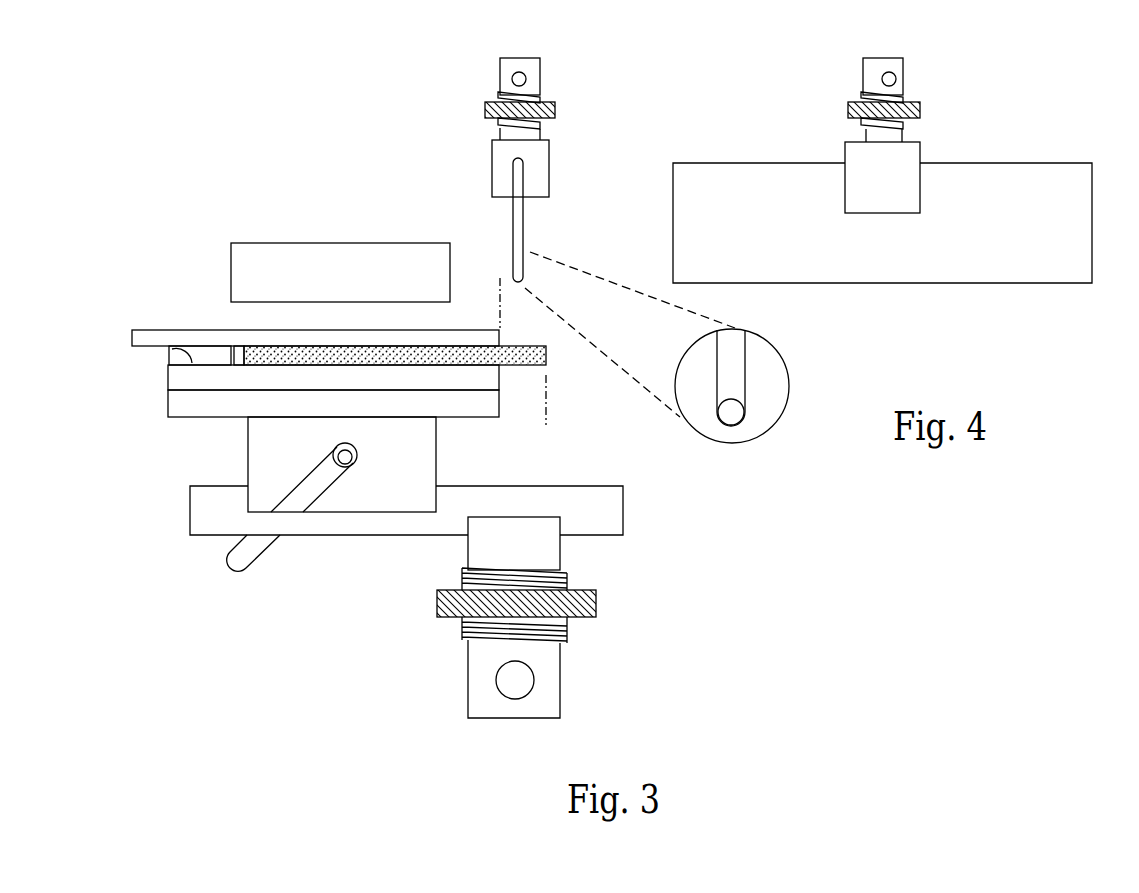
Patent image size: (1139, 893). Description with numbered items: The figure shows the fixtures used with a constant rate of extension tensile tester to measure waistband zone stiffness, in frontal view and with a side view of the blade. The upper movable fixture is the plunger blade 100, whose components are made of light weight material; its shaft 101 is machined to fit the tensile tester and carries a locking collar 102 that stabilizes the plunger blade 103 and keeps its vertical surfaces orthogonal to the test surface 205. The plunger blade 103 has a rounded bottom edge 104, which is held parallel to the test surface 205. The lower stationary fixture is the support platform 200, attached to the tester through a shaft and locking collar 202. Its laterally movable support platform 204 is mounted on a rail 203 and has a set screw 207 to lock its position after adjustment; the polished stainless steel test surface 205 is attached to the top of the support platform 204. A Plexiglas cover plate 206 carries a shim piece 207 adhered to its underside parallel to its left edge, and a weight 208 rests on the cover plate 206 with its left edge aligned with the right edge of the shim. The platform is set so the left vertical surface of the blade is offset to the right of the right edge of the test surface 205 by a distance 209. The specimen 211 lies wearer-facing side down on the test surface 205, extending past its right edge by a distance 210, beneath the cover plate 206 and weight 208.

In FIG. 3, the plunger blade 100 is at (355, 97).
In FIG. 4, the plunger blade 100 is at (988, 105).
In FIG. 3, the shaft 101 is at (540, 72).
In FIG. 4, the shaft 101 is at (883, 76).
In FIG. 3, the locking collar 102 is at (555, 110).
In FIG. 4, the locking collar 102 is at (884, 117).
In FIG. 3, the plunger blade 103 is at (523, 223).
In FIG. 4, the plunger blade 103 is at (993, 242).
In FIG. 4, the bottom edge 104 is at (866, 284).
In FIG. 3, the support platform 200 is at (251, 631).
In FIG. 3, the locking collar 202 is at (597, 600).
In FIG. 3, the rail 203 is at (623, 505).
In FIG. 3, the support platform 204 is at (220, 438).
In FIG. 3, the test surface 205 is at (170, 357).
In FIG. 3, the cover plate 206 is at (213, 330).
In FIG. 3, the set screw 207 is at (352, 462).
In FIG. 3, the weight 208 is at (325, 243).
In FIG. 3, the distance 209 is at (504, 272).
In FIG. 3, the distance 210 is at (522, 419).
In FIG. 3, the specimen 211 is at (547, 357).